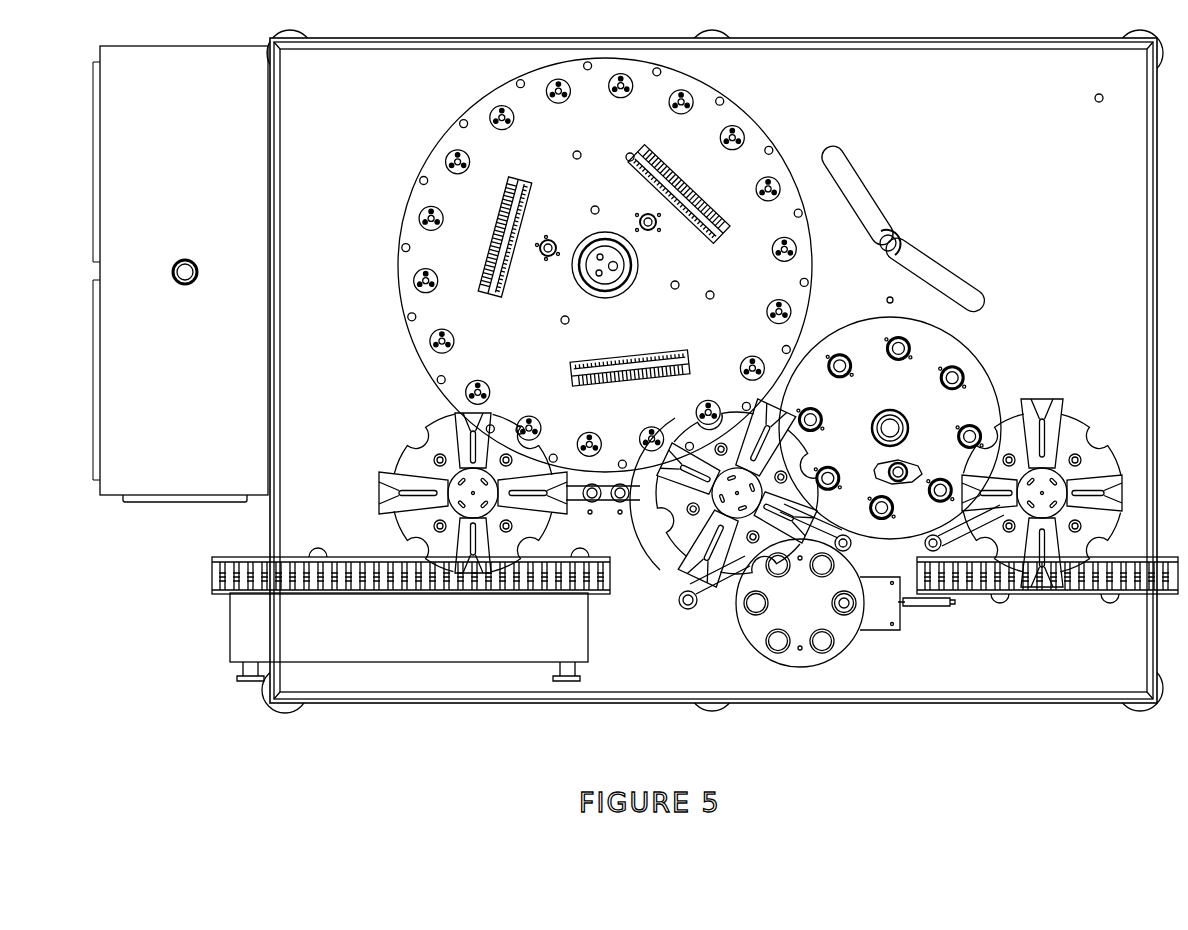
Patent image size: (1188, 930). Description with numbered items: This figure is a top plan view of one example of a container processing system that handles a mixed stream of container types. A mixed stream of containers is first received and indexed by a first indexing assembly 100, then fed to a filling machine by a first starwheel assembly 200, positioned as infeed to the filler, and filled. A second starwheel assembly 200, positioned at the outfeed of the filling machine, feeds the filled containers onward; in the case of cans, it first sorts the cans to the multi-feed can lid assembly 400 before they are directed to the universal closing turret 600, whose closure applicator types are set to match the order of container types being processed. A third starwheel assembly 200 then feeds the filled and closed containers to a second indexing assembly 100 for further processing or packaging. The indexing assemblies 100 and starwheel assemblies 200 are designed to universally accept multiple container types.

The indexing assembly 100 is at (268, 625).
The starwheel assembly 200 is at (410, 462).
The multi-feed can lid assembly 400 is at (843, 630).
The universal closing turret 600 is at (982, 405).